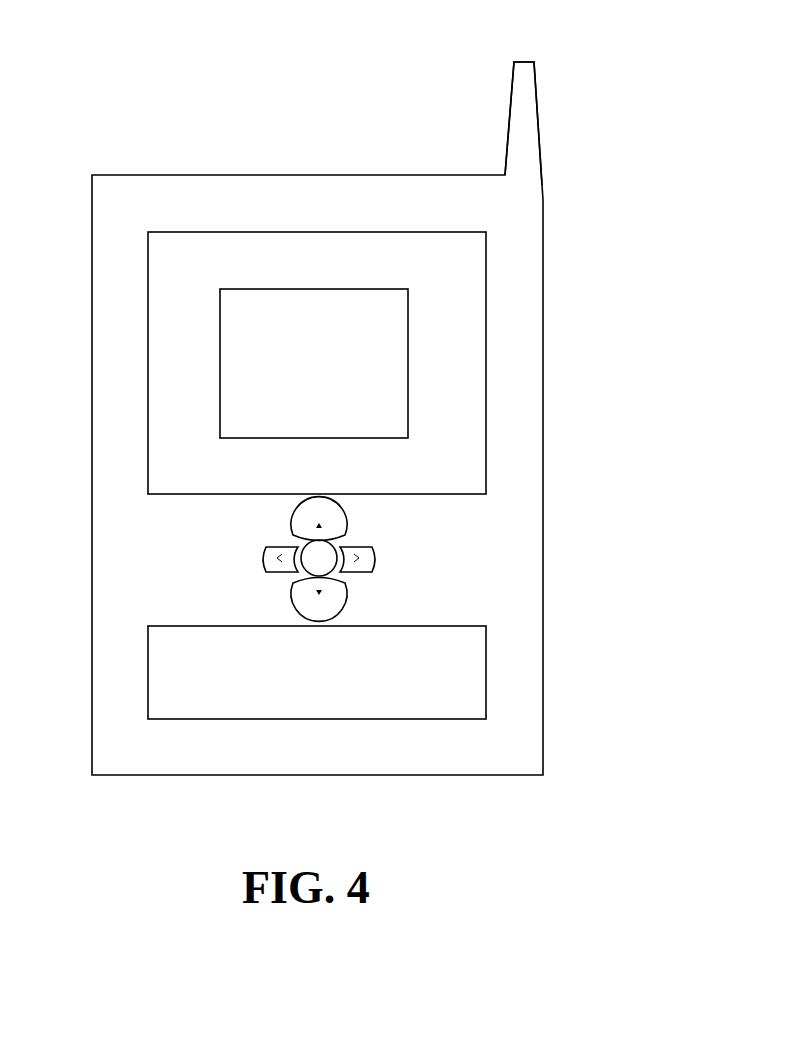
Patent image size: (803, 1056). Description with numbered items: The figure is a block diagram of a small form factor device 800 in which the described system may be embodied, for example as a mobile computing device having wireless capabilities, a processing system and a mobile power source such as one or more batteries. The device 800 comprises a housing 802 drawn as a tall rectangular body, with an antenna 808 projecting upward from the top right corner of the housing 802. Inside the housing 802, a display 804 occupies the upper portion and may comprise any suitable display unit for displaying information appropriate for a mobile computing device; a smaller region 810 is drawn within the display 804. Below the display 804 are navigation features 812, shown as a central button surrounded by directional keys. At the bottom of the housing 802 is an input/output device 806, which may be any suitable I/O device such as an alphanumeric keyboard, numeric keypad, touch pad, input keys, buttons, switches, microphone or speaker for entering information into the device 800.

The small form factor device 800 is at (104, 70).
The housing 802 is at (543, 476).
The display 804 is at (486, 251).
The input/output (I/O) device 806 is at (486, 662).
The antenna 808 is at (505, 111).
The display window 810 is at (408, 381).
The navigation features 812 is at (404, 549).